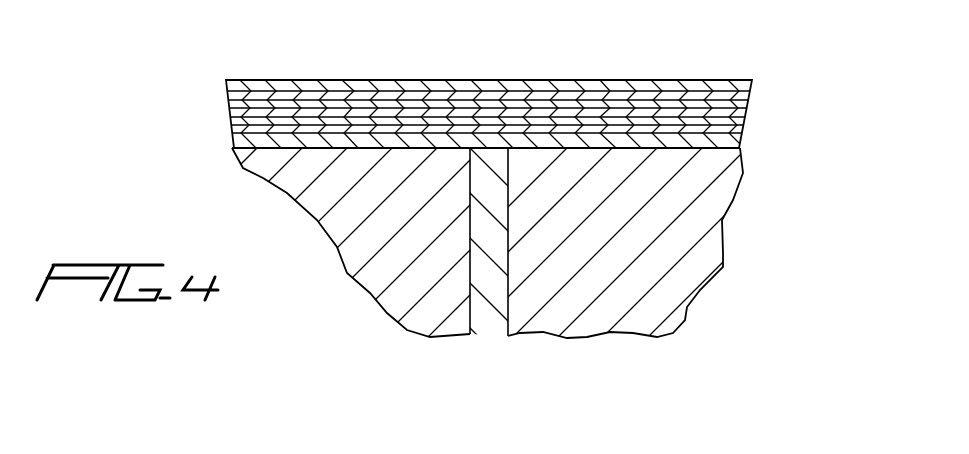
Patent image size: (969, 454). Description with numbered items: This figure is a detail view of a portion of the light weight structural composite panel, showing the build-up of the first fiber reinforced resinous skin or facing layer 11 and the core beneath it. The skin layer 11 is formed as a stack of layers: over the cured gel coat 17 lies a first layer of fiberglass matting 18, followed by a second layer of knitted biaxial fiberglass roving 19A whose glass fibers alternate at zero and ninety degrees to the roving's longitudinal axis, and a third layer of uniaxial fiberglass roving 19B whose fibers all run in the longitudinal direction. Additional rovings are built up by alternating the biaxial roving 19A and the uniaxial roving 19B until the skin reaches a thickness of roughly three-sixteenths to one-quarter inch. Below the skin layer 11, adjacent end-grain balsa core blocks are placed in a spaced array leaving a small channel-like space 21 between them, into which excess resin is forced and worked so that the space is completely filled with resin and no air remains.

The first fiber reinforced resinous skin or facing layer 11 is at (516, 97).
The gel coat 17 is at (240, 143).
The fiberglass matting 18 is at (752, 93).
The biaxial fiberglass roving 19A is at (750, 102).
The uniaxial fiberglass roving 19B is at (752, 110).
The channel-like space 21 is at (482, 268).